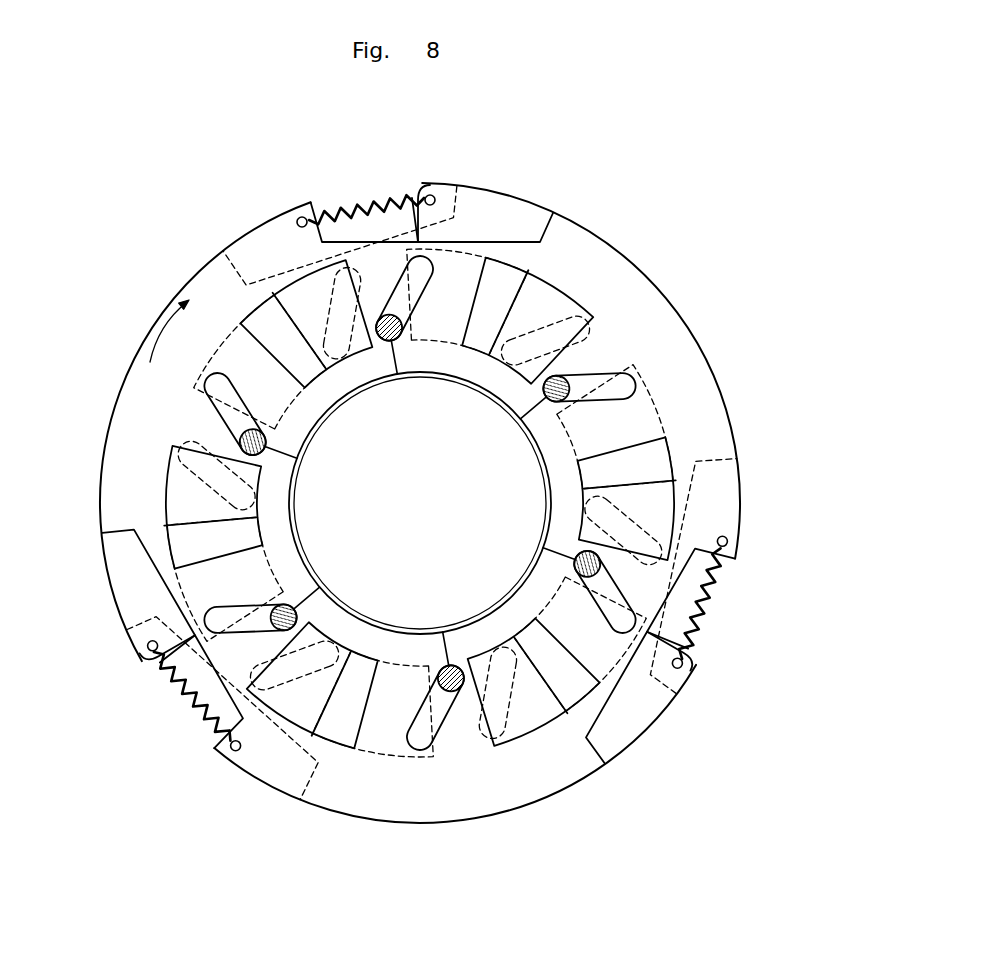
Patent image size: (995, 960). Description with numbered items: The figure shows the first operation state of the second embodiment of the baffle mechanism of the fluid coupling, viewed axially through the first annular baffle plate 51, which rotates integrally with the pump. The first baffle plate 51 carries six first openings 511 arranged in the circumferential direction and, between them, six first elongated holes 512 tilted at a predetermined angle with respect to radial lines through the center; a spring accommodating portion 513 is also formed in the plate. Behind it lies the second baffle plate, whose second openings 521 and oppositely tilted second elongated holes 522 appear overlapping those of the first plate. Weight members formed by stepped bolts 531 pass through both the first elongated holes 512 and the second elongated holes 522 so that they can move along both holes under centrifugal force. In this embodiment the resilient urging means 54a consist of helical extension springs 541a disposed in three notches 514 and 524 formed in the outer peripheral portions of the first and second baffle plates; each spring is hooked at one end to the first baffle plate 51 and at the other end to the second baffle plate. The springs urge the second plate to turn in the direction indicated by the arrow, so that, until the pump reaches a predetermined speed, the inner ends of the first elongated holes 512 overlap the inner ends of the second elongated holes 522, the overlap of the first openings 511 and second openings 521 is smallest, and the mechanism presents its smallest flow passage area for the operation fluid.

The first annular baffle plate 51 is at (480, 207).
The first openings 511 is at (510, 283).
The first elongated holes 512 is at (622, 388).
The spring accommodating portion 513 is at (293, 588).
The notch 514 is at (430, 194).
The second openings 521 is at (413, 495).
The second elongated holes 522 is at (420, 266).
The notch 524 is at (298, 216).
The stepped bolt 531 is at (288, 462).
The helical extension spring 541a is at (377, 185).
The resilient urging means 54a is at (449, 450).